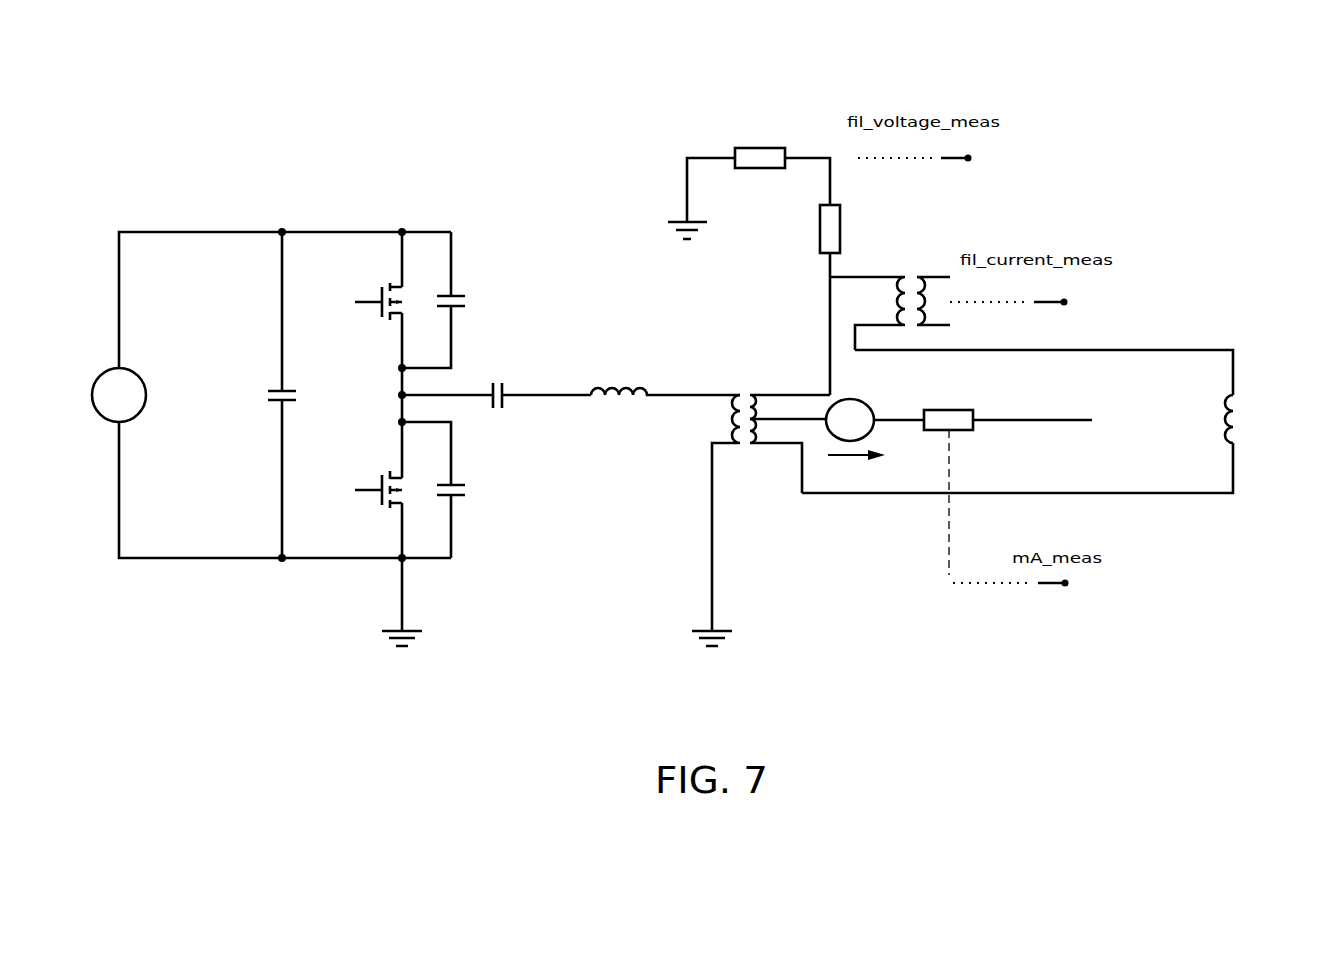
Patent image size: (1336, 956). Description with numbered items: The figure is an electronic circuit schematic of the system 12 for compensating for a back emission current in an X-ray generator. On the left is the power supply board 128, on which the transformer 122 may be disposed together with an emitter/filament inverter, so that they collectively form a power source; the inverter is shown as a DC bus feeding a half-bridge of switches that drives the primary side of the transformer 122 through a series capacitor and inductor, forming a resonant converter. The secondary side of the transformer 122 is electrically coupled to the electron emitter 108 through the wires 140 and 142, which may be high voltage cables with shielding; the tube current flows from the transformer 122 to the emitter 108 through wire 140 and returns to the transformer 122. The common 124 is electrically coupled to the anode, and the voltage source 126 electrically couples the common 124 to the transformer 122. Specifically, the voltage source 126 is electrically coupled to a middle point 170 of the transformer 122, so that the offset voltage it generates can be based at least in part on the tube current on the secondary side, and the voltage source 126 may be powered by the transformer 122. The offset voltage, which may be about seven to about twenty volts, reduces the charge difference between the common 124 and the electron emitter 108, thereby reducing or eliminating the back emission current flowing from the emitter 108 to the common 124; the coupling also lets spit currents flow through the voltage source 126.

The power supply board 128 is at (381, 170).
The system 12 is at (599, 193).
The transformer 122 is at (728, 375).
The middle point 170 is at (759, 412).
The voltage source 126 is at (851, 398).
The common 124 is at (1080, 415).
The wire 140 is at (1165, 350).
The electron emitter 108 is at (1236, 415).
The wire 142 is at (1185, 495).